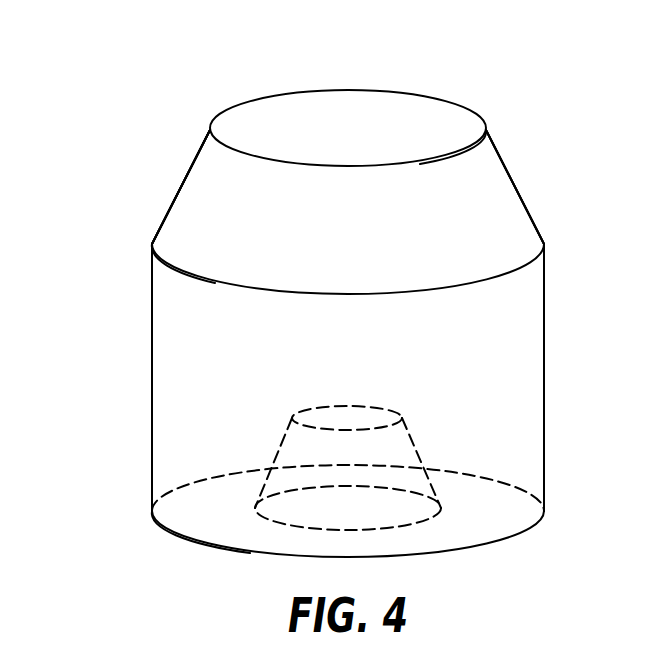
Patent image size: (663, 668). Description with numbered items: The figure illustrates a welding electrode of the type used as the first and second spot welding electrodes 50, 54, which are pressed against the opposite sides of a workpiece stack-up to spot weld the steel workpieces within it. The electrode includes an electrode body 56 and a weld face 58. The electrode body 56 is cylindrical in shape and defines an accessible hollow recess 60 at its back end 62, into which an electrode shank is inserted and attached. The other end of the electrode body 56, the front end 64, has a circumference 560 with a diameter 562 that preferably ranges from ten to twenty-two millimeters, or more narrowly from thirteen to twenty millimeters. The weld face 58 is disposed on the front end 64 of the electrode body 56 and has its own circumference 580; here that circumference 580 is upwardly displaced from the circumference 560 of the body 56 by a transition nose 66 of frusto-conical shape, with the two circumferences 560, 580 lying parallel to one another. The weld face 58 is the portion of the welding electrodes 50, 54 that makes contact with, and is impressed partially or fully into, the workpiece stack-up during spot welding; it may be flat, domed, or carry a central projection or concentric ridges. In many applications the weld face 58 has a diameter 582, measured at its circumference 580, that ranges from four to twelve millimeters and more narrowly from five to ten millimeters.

The first spot welding electrode 50 is at (150, 138).
The second spot welding electrode 54 is at (150, 138).
The electrode body 56 is at (521, 332).
The weld face 58 is at (413, 128).
The hollow recess 60 is at (276, 448).
The back end 62 is at (150, 512).
The front end 64 is at (151, 243).
The transition nose 66 is at (495, 207).
The circumference 560 is at (206, 282).
The diameter 562 is at (543, 357).
The circumference 580 is at (482, 141).
The diameter 582 is at (486, 130).